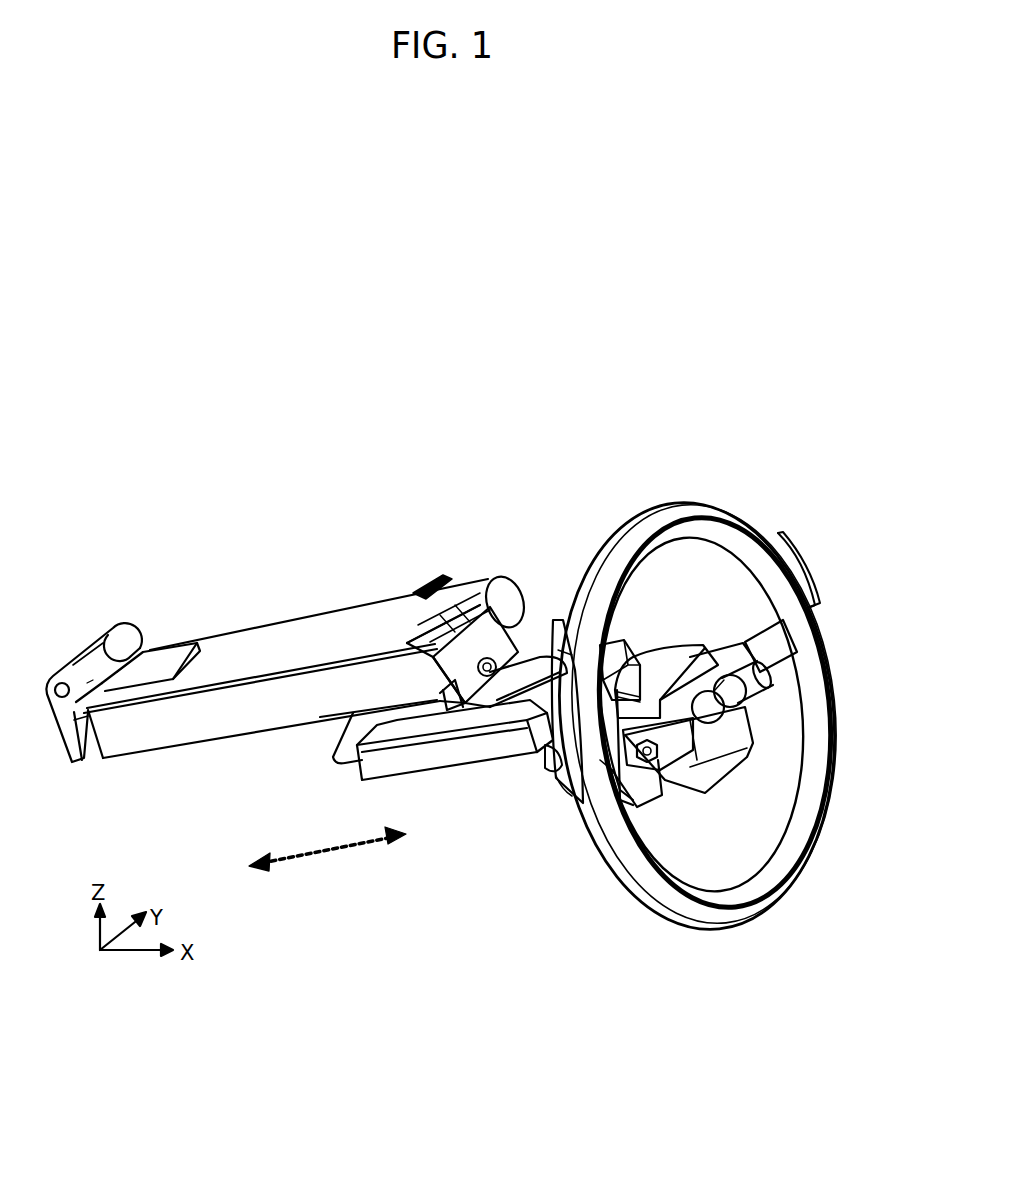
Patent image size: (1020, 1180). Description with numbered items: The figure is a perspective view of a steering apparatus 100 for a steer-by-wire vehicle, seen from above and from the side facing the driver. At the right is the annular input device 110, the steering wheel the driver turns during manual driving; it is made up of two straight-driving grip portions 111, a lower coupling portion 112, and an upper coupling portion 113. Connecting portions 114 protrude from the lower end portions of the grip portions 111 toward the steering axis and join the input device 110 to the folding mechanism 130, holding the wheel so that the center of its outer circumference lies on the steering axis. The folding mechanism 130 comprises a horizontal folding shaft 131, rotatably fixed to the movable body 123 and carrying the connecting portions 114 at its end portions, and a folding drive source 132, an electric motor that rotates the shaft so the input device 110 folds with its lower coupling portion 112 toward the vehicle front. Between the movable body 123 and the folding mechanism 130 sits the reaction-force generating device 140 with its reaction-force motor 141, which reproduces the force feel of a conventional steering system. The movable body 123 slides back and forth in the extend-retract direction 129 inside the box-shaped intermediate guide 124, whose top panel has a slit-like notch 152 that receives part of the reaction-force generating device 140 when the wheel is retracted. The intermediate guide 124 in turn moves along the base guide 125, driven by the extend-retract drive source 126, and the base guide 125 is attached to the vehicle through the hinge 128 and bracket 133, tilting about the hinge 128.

The steering apparatus 100 is at (611, 371).
The input device 110 is at (648, 500).
The straight-driving grip portions 111 is at (548, 786).
The lower coupling portion 112 is at (764, 932).
The upper coupling portion 113 is at (712, 505).
The connecting portions 114 is at (772, 640).
The movable body 123 is at (553, 685).
The intermediate guide 124 is at (405, 760).
The base guide 125 is at (440, 600).
The extend-retract drive source 126 is at (495, 580).
The hinge 128 is at (112, 628).
The extend-retract direction 129 is at (326, 850).
The folding mechanism 130 is at (742, 650).
The folding shaft 131 is at (660, 733).
The folding drive source 132 is at (735, 706).
The bracket 133 is at (264, 637).
The reaction-force generating device 140 is at (570, 790).
The reaction-force motor 141 is at (627, 665).
The notch 152 is at (500, 710).